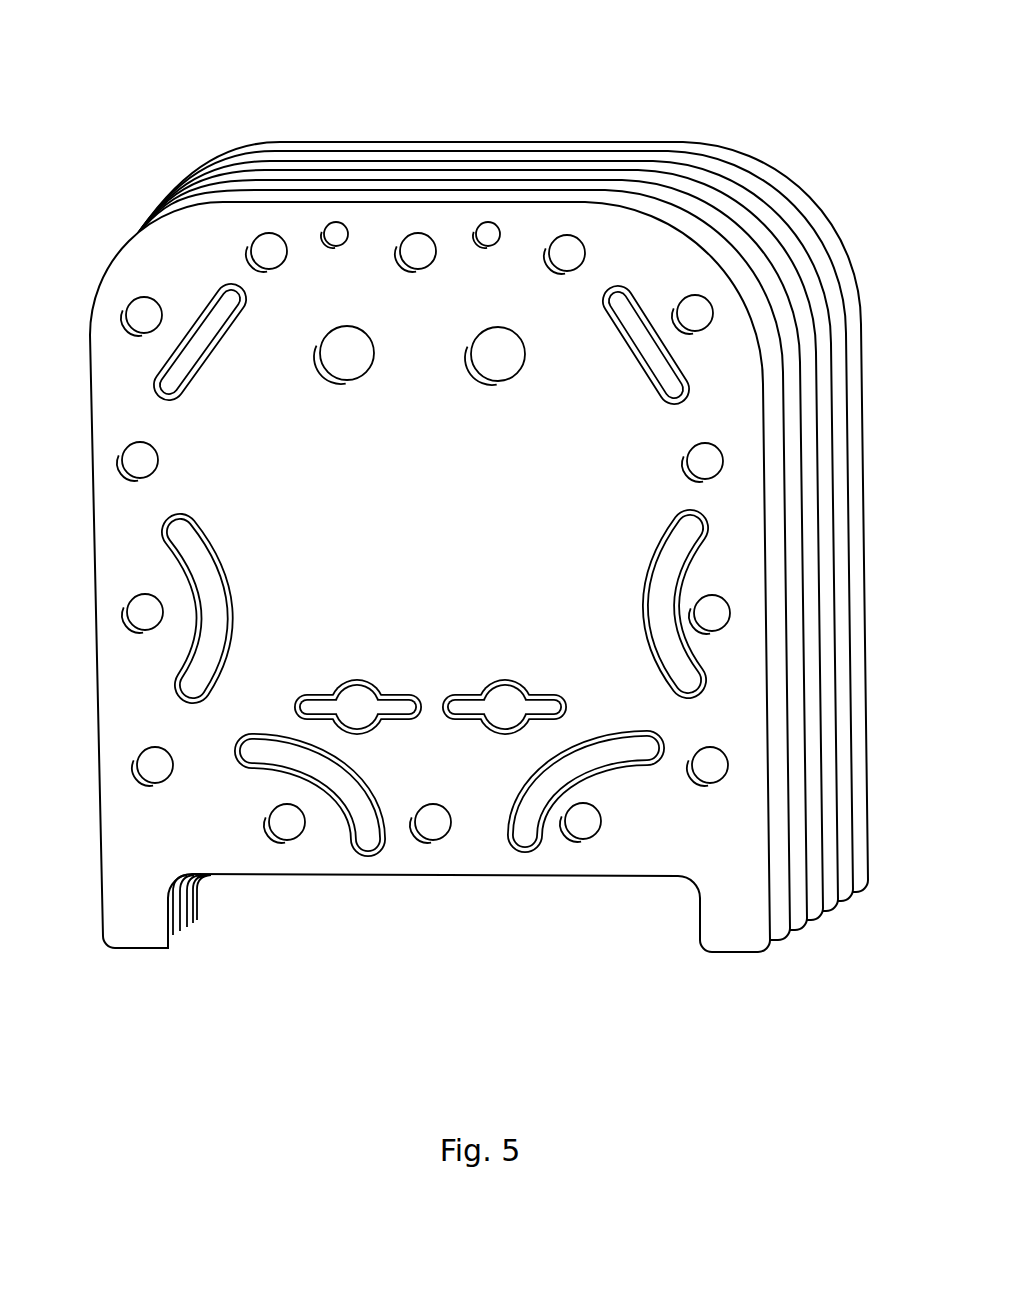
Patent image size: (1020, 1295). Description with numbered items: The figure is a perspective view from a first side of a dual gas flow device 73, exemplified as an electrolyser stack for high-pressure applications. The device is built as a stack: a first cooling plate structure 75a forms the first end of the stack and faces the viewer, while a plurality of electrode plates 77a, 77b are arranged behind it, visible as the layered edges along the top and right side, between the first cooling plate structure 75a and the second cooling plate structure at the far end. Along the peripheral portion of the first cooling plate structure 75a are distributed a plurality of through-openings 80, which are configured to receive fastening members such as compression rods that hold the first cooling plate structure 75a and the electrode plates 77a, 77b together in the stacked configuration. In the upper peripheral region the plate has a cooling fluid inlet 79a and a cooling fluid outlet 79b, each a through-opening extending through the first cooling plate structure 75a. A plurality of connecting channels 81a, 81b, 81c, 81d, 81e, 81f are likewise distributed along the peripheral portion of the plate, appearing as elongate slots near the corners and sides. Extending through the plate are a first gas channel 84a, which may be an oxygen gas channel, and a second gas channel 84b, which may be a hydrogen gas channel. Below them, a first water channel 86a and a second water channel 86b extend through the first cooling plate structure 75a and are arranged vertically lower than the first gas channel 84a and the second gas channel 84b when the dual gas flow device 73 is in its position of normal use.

The dual gas flow device 73 is at (475, 528).
The first cooling plate structure 75a is at (425, 622).
The electrode plate 77a is at (461, 482).
The electrode plate 77b is at (484, 462).
The cooling fluid inlet 79a is at (332, 222).
The cooling fluid outlet 79b is at (484, 222).
The through-openings 80 is at (258, 235).
The connecting channel 81a is at (128, 300).
The connecting channel 81b is at (115, 608).
The connecting channel 81c is at (313, 855).
The connecting channel 81d is at (572, 870).
The connecting channel 81e is at (799, 564).
The connecting channel 81f is at (762, 250).
The first gas channel 84a is at (327, 335).
The second gas channel 84b is at (518, 336).
The first water channel 86a is at (358, 836).
The second water channel 86b is at (500, 821).